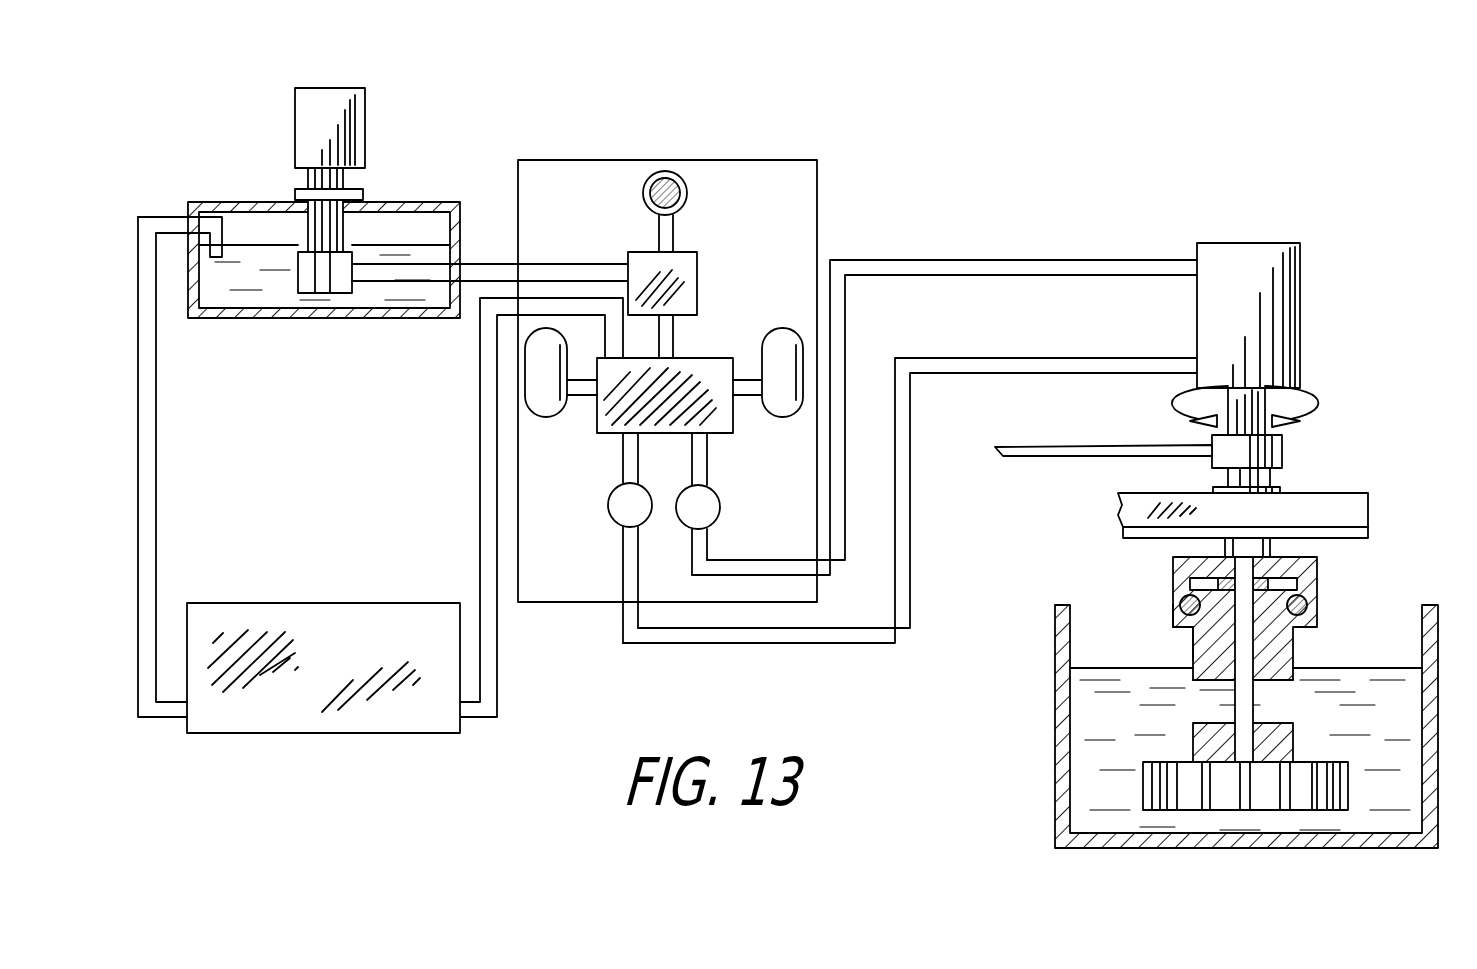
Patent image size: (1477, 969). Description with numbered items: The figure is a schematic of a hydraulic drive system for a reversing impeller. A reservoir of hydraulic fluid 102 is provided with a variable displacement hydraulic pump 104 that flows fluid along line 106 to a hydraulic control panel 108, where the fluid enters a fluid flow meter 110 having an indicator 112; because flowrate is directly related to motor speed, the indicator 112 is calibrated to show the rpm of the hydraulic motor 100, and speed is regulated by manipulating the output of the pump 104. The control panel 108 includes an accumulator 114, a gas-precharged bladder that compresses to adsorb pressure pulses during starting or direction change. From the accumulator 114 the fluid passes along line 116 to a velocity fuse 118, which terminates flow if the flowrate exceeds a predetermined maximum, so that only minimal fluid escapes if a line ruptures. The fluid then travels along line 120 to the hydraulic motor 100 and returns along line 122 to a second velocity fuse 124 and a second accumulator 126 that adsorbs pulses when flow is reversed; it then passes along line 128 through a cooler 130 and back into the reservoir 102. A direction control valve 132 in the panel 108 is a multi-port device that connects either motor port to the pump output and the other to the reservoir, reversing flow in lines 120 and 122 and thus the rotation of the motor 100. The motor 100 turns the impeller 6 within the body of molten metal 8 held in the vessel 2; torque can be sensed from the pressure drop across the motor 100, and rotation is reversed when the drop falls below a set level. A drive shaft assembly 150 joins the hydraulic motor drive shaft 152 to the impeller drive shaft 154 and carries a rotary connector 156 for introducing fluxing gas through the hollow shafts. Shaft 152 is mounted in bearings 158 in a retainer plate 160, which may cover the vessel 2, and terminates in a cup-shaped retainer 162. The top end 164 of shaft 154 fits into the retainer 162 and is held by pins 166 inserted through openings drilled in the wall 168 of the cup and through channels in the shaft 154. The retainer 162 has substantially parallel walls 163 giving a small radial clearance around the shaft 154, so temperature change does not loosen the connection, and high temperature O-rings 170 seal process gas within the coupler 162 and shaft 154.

The vessel 2 is at (1180, 726).
The impeller 6 is at (1174, 813).
The body of molten metal 8 is at (1196, 749).
The hydraulic motor 100 is at (1284, 303).
The reservoir of hydraulic fluid 102 is at (356, 218).
The variable displacement hydraulic pump 104 is at (379, 182).
The line 106 is at (497, 194).
The hydraulic control panel 108 is at (731, 361).
The fluid flow meter 110 is at (703, 269).
The indicator 112 is at (703, 168).
The accumulator 114 is at (823, 308).
The line 116 is at (744, 504).
The velocity fuse 118 is at (735, 510).
The line 120 is at (944, 385).
The line 122 is at (910, 500).
The second velocity fuse 124 is at (591, 538).
The second accumulator 126 is at (557, 405).
The line 128 is at (380, 467).
The cooler 130 is at (323, 640).
The direction control valve 132 is at (673, 348).
The drive shaft assembly 150 is at (1347, 484).
The hydraulic motor drive shaft 152 is at (1105, 469).
The impeller drive shaft 154 is at (1303, 689).
The rotary connector 156 is at (1301, 427).
The bearings 158 is at (1338, 494).
The retainer plate 160 is at (1297, 522).
The cup-shaped retainer 162 is at (1291, 614).
The walls 163 is at (1135, 592).
The top end 164 is at (1118, 709).
The pins 166 is at (1262, 566).
The wall 168 is at (1064, 623).
The O-rings 170 is at (1079, 659).